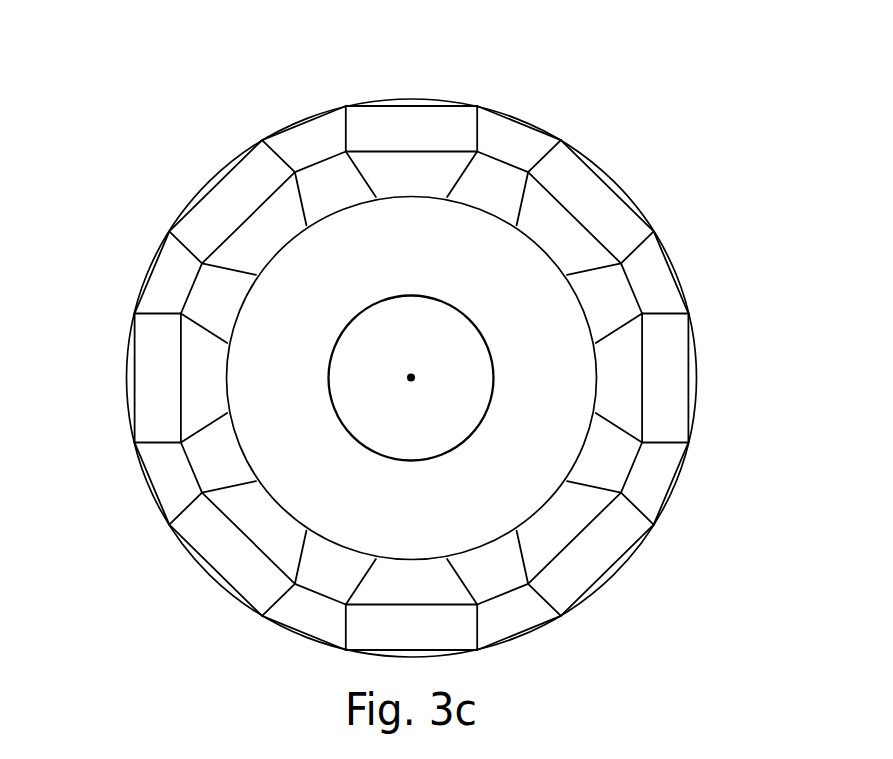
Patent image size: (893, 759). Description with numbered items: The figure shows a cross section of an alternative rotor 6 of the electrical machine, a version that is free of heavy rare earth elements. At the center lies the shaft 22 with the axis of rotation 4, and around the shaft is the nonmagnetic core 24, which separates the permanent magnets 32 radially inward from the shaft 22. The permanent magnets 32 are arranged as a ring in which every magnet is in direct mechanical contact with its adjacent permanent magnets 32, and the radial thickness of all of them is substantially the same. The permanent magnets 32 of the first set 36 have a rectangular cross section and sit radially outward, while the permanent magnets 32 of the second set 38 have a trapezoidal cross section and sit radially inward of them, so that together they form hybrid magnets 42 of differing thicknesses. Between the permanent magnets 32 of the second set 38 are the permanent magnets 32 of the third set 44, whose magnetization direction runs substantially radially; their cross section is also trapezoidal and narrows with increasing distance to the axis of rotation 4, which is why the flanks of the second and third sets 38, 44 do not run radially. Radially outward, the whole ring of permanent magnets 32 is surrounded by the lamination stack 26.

The axis of rotation 4 is at (411, 378).
The rotor 6 is at (404, 374).
The shaft 22 is at (472, 375).
The nonmagnetic core 24 is at (568, 378).
The lamination stack 26 is at (170, 282).
The permanent magnets 32 is at (404, 374).
The first set 36 is at (367, 127).
The second set 38 is at (411, 321).
The hybrid magnets 42 is at (562, 515).
The third set 44 is at (323, 177).